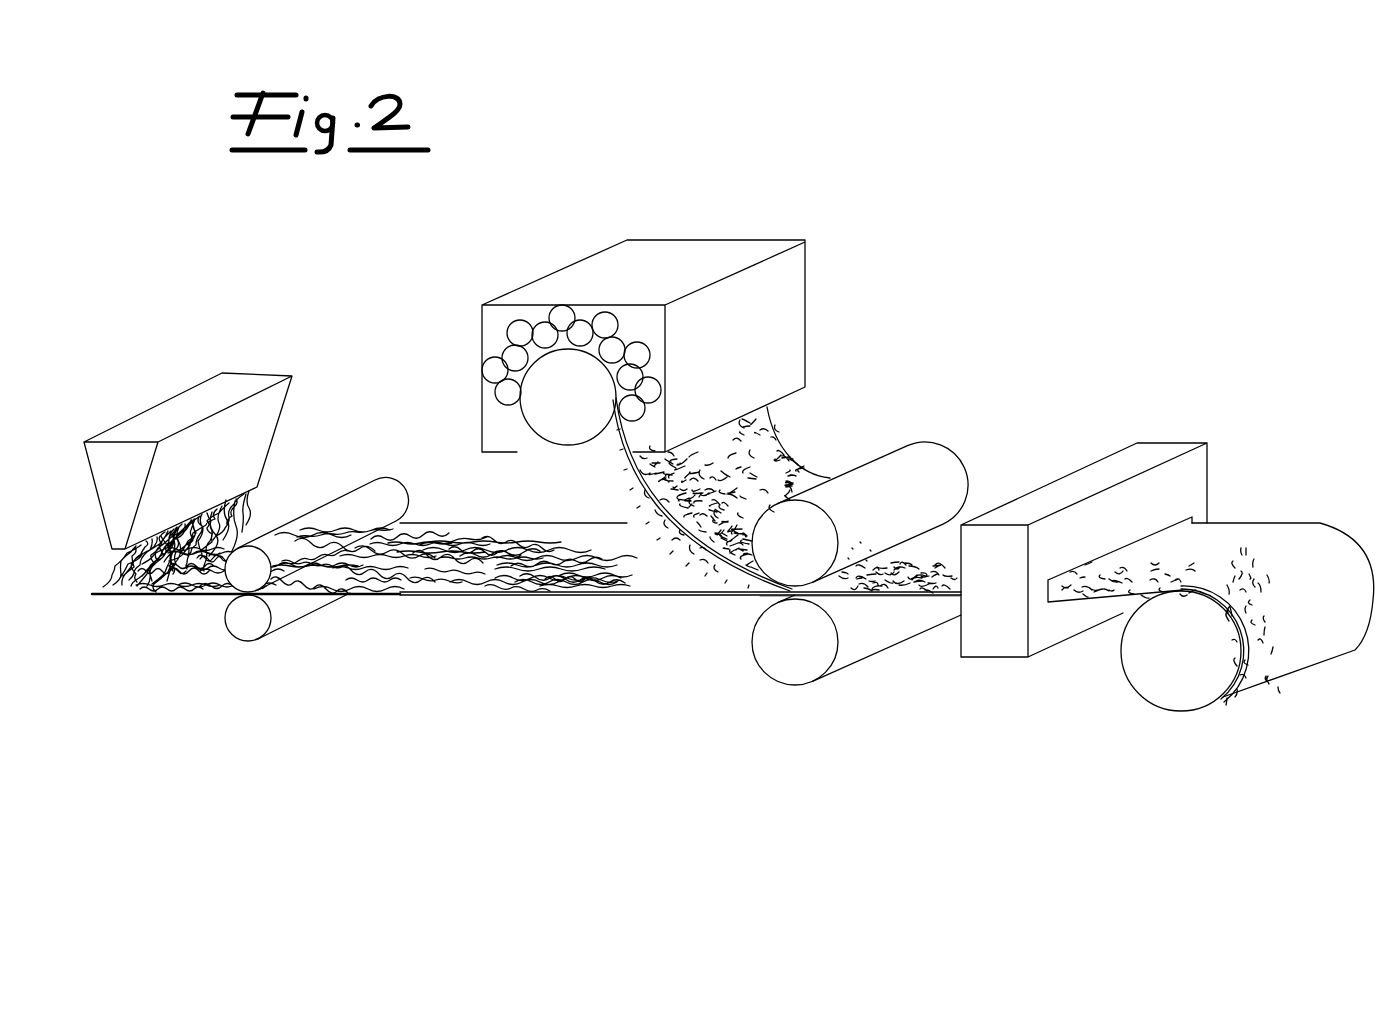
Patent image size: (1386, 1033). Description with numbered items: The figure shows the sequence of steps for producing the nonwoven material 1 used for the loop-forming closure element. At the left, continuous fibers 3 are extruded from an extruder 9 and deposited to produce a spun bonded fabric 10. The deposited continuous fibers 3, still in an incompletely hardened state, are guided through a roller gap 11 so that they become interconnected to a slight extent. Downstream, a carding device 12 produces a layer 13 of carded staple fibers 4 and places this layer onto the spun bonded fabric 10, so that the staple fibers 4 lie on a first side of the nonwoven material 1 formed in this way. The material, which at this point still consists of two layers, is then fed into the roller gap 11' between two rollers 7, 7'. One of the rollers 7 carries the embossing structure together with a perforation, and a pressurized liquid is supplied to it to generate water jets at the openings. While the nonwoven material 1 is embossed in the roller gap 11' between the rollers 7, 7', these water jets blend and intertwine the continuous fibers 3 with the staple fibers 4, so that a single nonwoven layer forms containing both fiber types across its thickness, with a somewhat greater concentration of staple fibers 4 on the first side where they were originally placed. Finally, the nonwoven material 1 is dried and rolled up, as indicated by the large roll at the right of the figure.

The nonwoven material 1 is at (736, 598).
The continuous fibers 3 is at (140, 578).
The staple fibers 4 is at (700, 543).
The roller 7 is at (860, 482).
The roller 7' is at (856, 677).
The extruder 9 is at (202, 452).
The spun bonded fabric 10 is at (436, 536).
The roller gap 11 is at (287, 589).
The roller gap 11' is at (824, 671).
The carding device 12 is at (587, 260).
The layer 13 is at (772, 446).